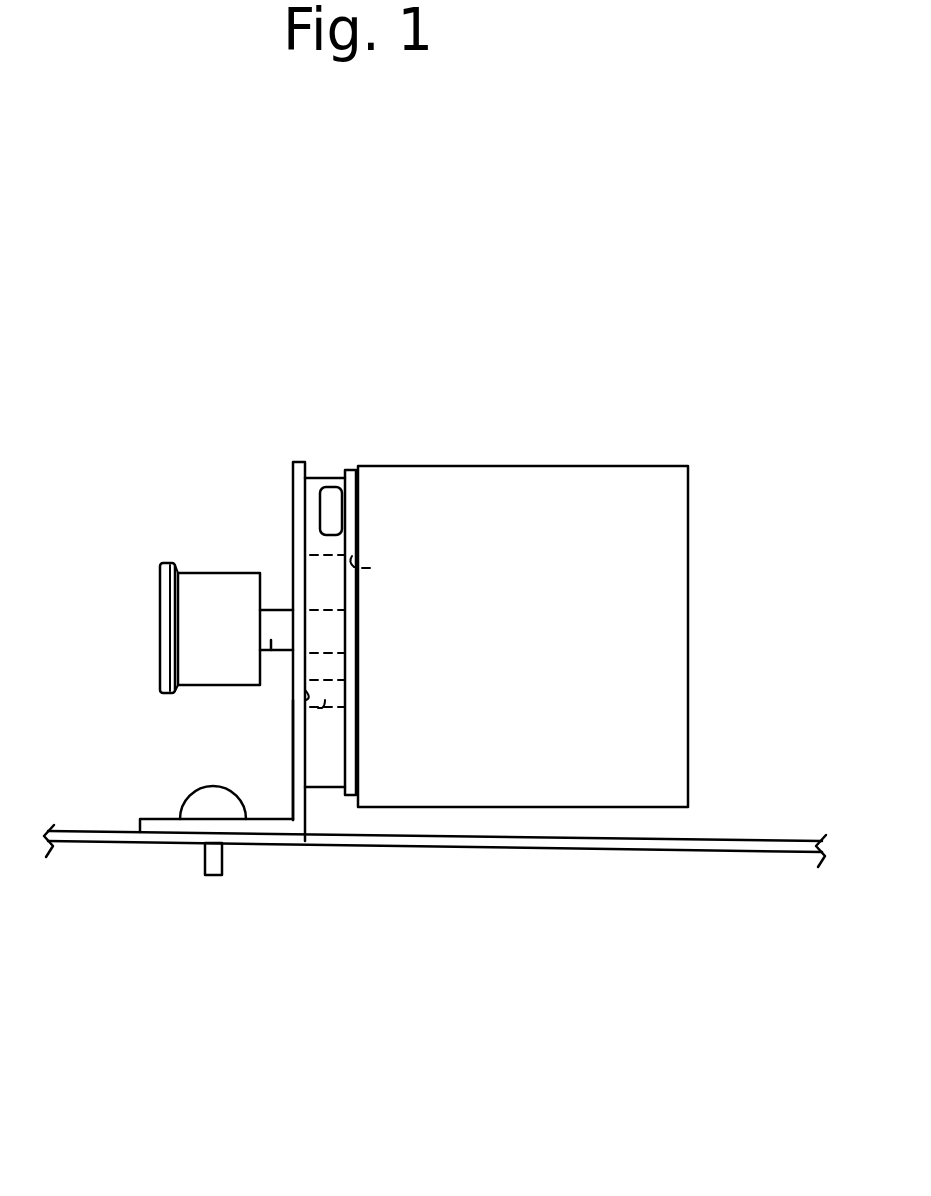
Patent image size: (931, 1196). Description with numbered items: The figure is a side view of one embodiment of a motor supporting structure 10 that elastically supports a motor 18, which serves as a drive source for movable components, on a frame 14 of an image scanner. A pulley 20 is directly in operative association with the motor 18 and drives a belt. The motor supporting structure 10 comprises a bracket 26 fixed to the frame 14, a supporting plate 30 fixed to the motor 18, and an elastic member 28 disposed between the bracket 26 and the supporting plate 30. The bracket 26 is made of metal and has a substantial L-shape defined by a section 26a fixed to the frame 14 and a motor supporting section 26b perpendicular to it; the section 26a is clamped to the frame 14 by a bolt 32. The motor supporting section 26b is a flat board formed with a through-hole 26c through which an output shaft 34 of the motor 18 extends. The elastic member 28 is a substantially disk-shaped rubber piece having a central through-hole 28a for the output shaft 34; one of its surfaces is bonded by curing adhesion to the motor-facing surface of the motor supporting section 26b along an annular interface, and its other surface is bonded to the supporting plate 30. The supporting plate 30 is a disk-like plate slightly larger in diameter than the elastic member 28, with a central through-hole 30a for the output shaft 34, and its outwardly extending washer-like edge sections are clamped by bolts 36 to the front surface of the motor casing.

The motor supporting structure 10 is at (335, 435).
The frame 14 is at (537, 848).
The motor 18 is at (545, 508).
The pulley 20 is at (205, 598).
The bracket 26 is at (275, 556).
The section fixed to the frame 26a is at (160, 826).
The motor supporting section 26b is at (293, 745).
The through-hole 26c is at (368, 687).
The elastic member 28 is at (327, 762).
The through-hole 28a is at (368, 708).
The supporting plate 30 is at (358, 610).
The through-hole 30a is at (378, 560).
The bolt 32 is at (202, 802).
The output shaft 34 is at (271, 640).
The bolts 36 is at (335, 500).